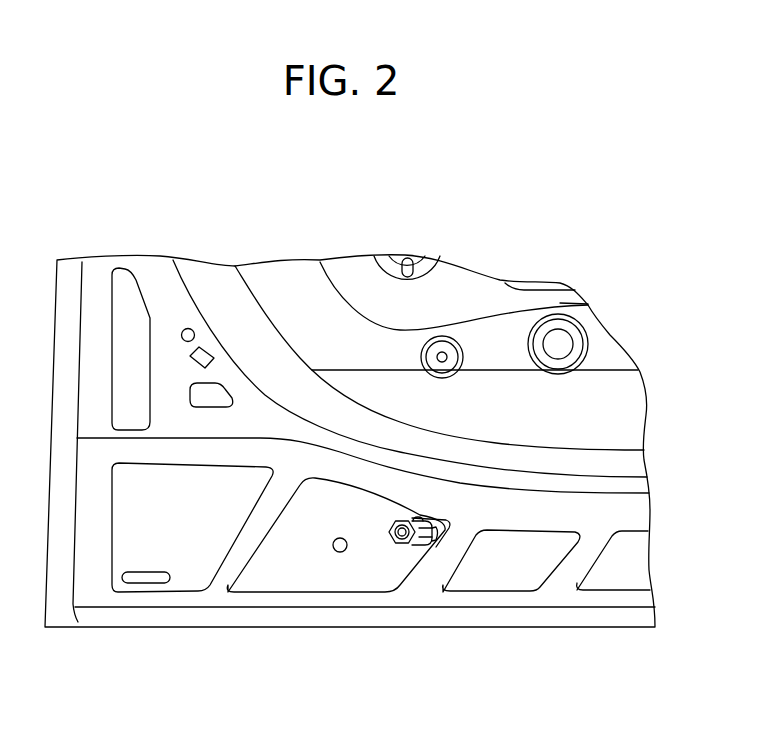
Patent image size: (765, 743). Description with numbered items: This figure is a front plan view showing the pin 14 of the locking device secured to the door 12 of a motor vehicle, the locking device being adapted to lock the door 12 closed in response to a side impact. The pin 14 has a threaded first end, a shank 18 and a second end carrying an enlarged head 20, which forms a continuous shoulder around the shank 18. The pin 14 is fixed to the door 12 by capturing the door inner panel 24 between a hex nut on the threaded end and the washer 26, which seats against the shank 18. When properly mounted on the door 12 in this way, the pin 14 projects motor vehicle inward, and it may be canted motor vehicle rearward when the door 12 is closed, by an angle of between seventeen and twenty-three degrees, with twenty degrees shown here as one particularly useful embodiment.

The door 12 is at (532, 273).
The pin 14 is at (385, 547).
The shank 18 is at (465, 540).
The enlarged head 20 is at (394, 545).
The door inner panel 24 is at (403, 567).
The washer 26 is at (432, 546).